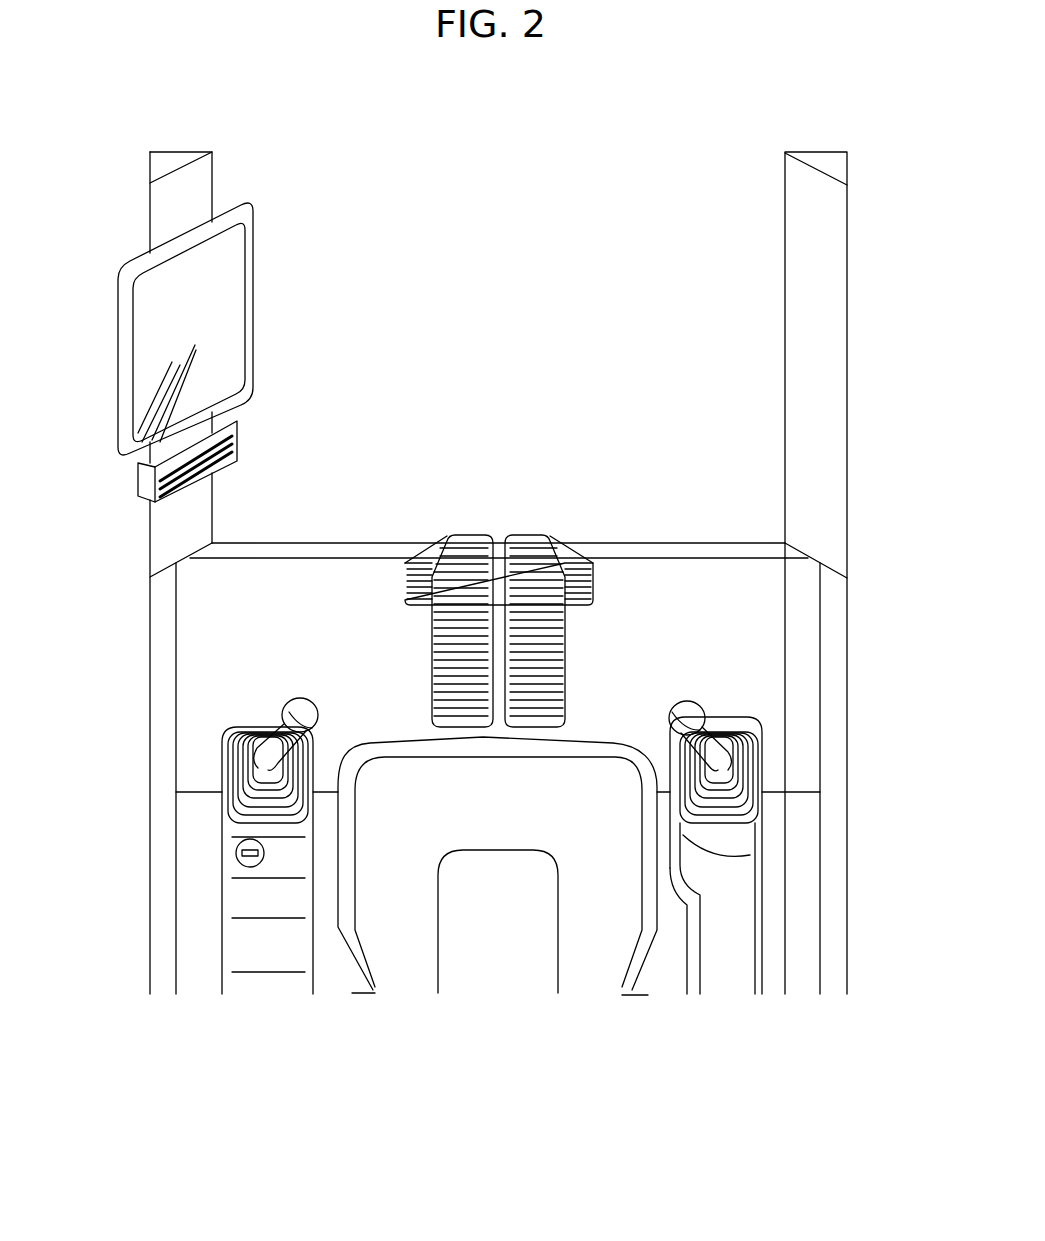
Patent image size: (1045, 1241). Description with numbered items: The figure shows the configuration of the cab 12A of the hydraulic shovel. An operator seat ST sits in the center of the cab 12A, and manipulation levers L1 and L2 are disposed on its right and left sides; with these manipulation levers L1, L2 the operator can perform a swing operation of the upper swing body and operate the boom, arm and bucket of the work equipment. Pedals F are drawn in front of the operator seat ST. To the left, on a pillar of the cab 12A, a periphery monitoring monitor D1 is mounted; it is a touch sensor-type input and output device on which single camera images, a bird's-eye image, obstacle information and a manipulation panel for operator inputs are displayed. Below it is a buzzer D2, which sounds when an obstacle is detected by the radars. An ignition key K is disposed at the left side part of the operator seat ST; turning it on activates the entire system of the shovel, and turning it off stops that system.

The cab 12A is at (866, 150).
The periphery monitoring monitor D1 is at (153, 325).
The buzzer D2 is at (140, 486).
The foot pedals F is at (535, 532).
The operator seat ST is at (493, 957).
The manipulation lever L1 is at (304, 703).
The manipulation lever L2 is at (688, 703).
The ignition key K is at (240, 857).